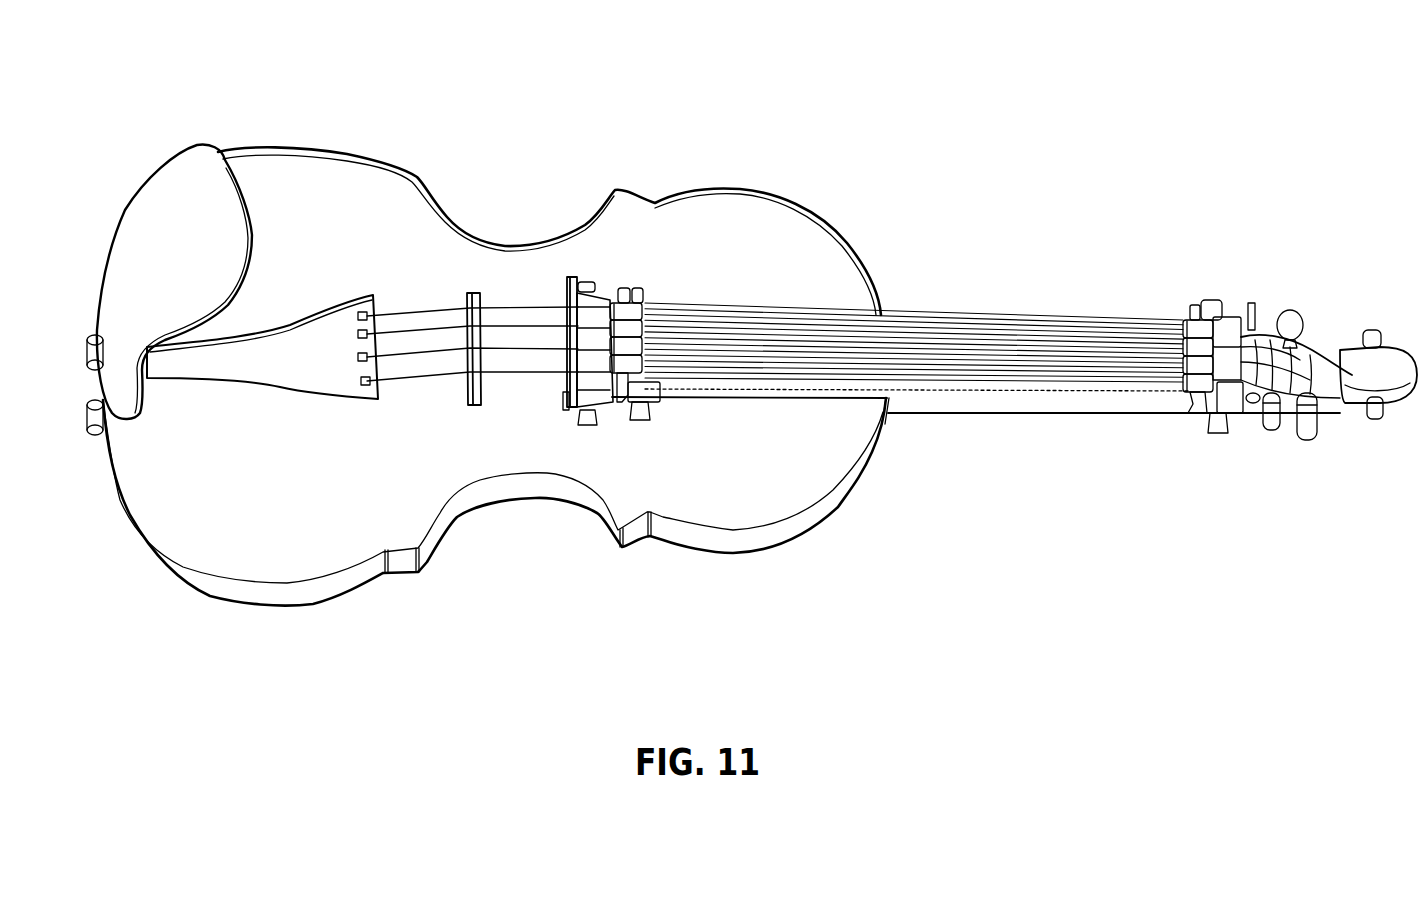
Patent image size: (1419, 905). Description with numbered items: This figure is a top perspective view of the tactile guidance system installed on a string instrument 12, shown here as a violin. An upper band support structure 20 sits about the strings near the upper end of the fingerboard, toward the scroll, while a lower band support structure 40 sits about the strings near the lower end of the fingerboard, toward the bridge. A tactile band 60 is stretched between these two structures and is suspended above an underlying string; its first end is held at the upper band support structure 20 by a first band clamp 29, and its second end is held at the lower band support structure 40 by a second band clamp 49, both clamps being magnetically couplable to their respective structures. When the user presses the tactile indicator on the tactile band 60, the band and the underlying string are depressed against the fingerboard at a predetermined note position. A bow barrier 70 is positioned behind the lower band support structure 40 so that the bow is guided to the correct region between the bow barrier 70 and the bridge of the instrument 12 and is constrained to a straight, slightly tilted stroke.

The string instrument 12 is at (350, 236).
The bow barrier 70 is at (579, 275).
The second band clamp 49 is at (635, 302).
The lower band support structure 40 is at (655, 400).
The tactile band 60 is at (1038, 373).
The first band clamp 29 is at (1184, 321).
The upper band support structure 20 is at (1230, 320).